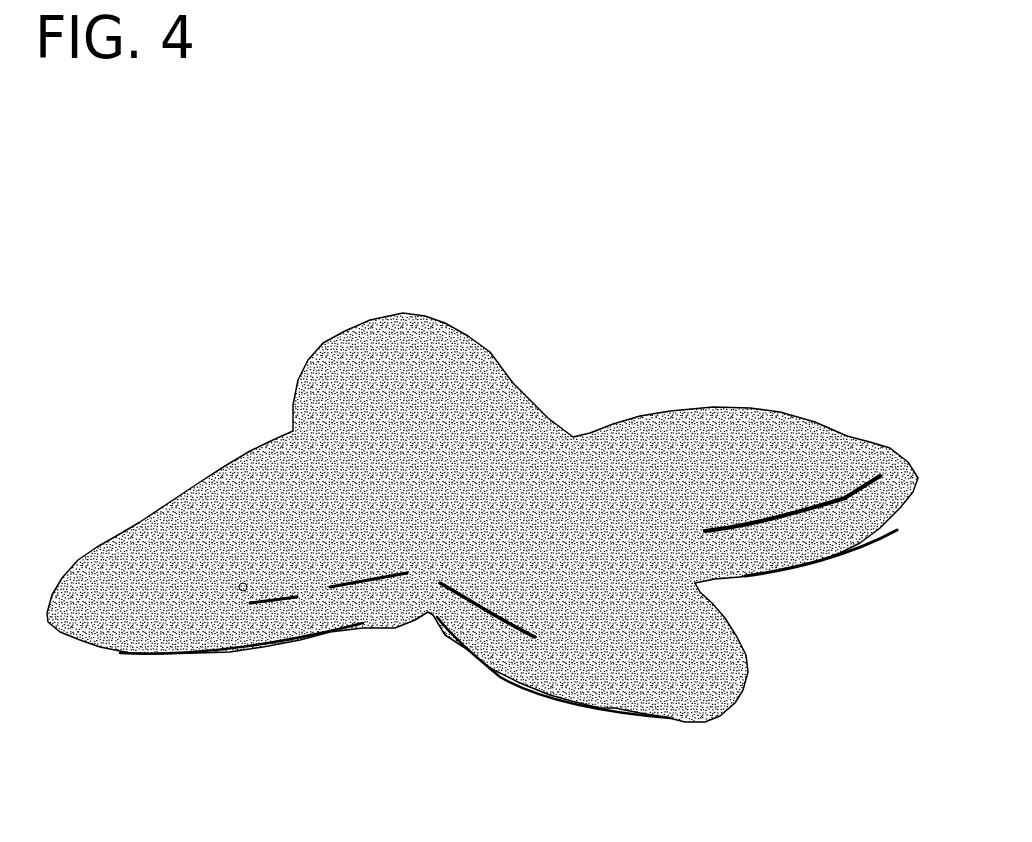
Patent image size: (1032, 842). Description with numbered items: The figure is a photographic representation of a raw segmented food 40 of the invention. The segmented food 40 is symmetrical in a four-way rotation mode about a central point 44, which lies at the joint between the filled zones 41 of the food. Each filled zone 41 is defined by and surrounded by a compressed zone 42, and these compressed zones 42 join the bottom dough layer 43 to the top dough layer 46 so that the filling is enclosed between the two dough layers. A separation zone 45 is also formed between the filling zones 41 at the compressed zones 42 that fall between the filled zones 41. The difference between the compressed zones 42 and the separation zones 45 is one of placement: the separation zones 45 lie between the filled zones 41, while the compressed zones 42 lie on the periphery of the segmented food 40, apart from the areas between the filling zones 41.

The segmented food 40 is at (700, 240).
The filled zone 41 is at (450, 418).
The compressed zone 42 is at (830, 530).
The bottom dough layer 43 is at (247, 643).
The central point 44 is at (510, 487).
The separation zone 45 is at (443, 540).
The top dough layer 46 is at (797, 457).